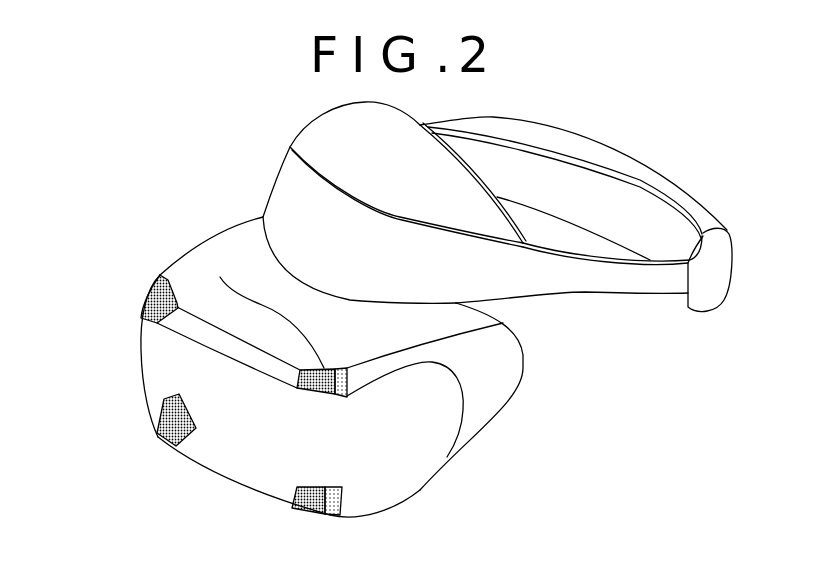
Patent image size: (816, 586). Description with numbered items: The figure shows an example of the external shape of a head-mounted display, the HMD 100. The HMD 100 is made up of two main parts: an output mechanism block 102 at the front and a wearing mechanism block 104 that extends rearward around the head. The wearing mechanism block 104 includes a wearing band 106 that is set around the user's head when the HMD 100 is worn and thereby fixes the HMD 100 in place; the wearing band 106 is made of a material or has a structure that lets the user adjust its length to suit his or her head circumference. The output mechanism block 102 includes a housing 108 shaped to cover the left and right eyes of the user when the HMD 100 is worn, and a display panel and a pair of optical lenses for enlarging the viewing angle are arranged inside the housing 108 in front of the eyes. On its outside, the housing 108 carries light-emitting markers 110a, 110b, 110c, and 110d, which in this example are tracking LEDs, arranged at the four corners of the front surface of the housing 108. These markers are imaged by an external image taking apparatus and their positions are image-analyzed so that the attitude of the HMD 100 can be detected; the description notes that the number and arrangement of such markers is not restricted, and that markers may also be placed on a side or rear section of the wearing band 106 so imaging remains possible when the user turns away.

The HMD 100 is at (420, 578).
The output mechanism block 102 is at (139, 329).
The wearing mechanism block 104 is at (641, 154).
The wearing band 106 is at (601, 294).
The housing 108 is at (421, 491).
The light-emitting marker 110a is at (160, 273).
The light-emitting marker 110b is at (220, 277).
The light-emitting marker 110c is at (168, 444).
The light-emitting marker 110d is at (303, 516).